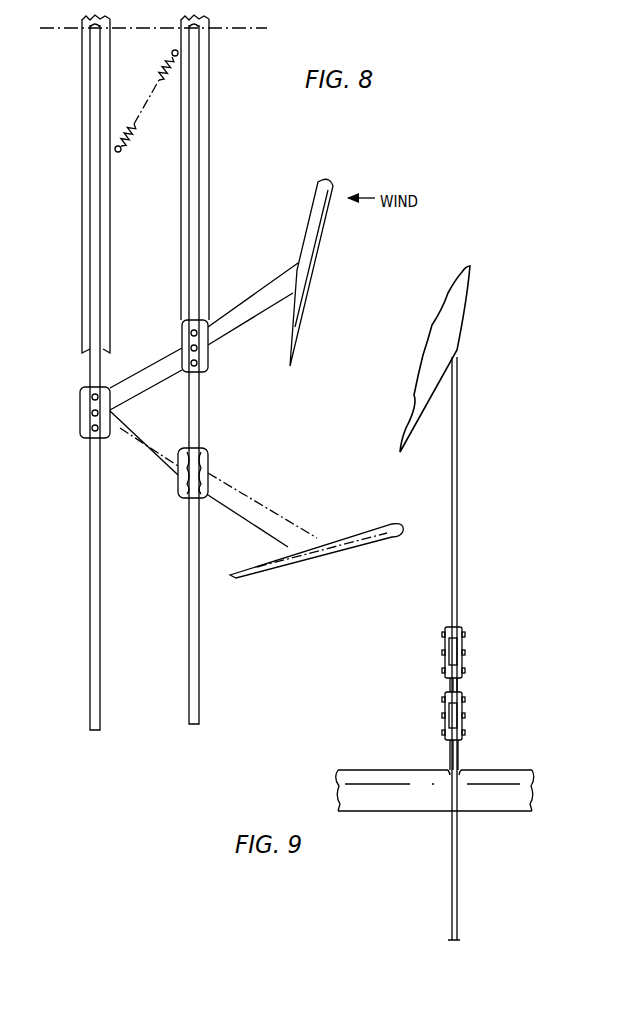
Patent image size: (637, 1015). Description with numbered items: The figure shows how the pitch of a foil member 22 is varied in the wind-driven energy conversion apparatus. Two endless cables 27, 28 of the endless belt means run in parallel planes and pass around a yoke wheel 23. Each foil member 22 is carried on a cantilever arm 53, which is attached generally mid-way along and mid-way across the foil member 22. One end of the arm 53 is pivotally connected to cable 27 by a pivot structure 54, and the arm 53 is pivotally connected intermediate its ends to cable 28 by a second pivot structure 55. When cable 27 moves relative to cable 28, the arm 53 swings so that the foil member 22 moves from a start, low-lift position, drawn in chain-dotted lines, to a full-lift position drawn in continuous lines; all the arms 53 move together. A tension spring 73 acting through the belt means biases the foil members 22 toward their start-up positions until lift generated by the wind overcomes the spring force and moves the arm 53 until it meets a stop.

In FIG. 8, the foil member 22 is at (333, 538).
In FIG. 9, the foil member 22 is at (495, 770).
In FIG. 8, the yoke wheel 23 is at (82, 96).
In FIG. 8, the endless cable 27 is at (98, 510).
In FIG. 8, the endless cable 28 is at (189, 531).
In FIG. 8, the cantilever arm 53 is at (240, 496).
In FIG. 8, the pivot structure 54 is at (111, 385).
In FIG. 9, the pivot structure 54 is at (471, 645).
In FIG. 8, the pivot structure 55 is at (210, 453).
In FIG. 9, the pivot structure 55 is at (473, 713).
In FIG. 8, the tension spring 73 is at (161, 63).